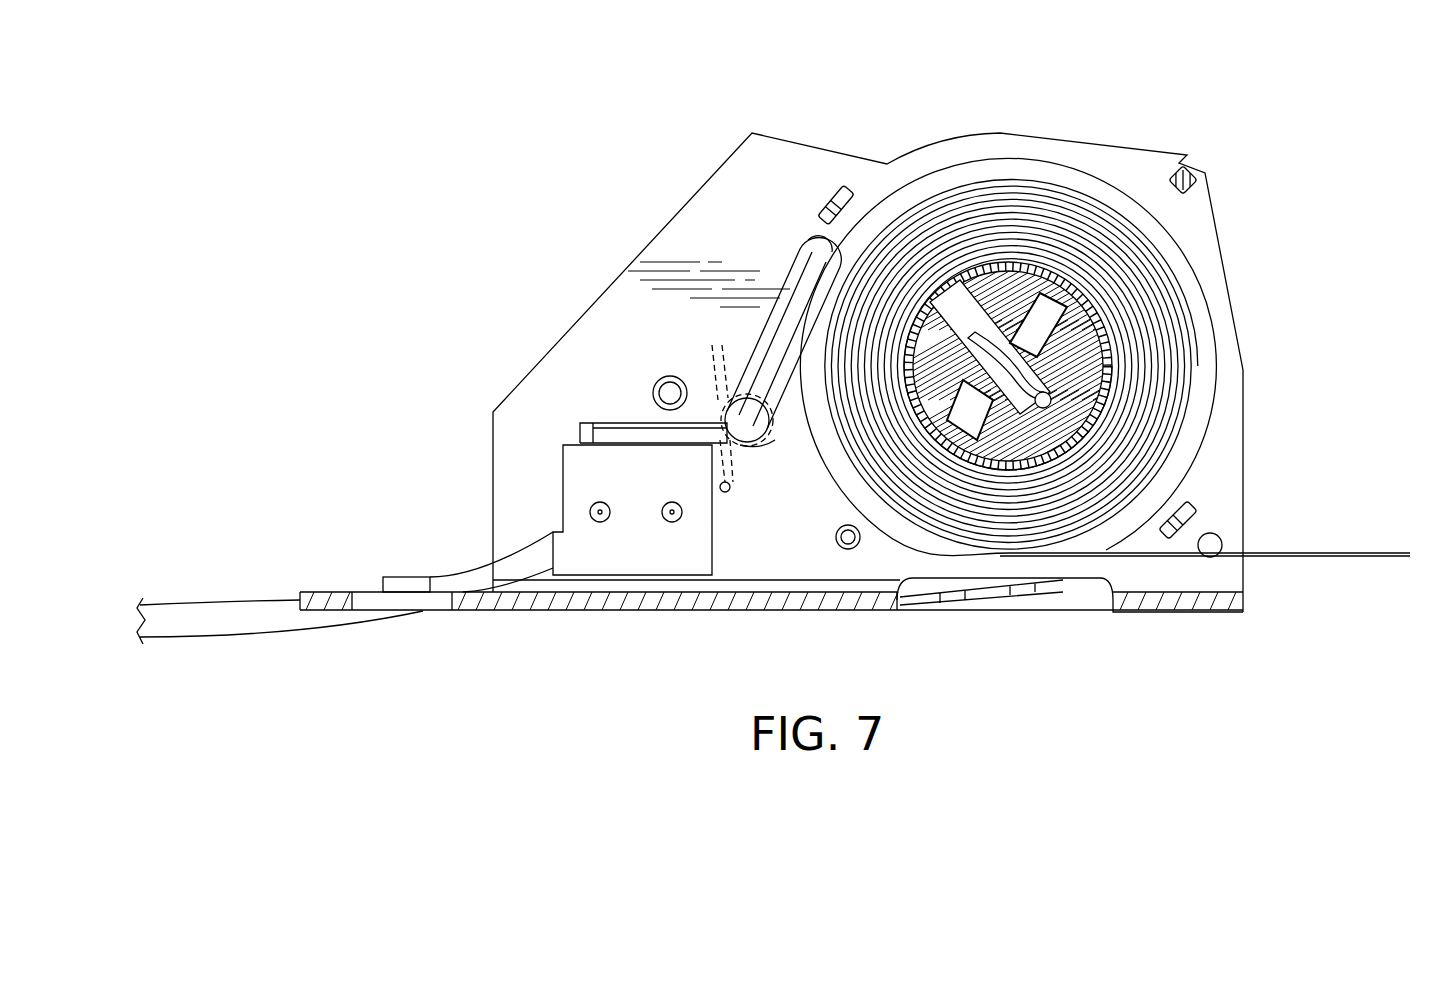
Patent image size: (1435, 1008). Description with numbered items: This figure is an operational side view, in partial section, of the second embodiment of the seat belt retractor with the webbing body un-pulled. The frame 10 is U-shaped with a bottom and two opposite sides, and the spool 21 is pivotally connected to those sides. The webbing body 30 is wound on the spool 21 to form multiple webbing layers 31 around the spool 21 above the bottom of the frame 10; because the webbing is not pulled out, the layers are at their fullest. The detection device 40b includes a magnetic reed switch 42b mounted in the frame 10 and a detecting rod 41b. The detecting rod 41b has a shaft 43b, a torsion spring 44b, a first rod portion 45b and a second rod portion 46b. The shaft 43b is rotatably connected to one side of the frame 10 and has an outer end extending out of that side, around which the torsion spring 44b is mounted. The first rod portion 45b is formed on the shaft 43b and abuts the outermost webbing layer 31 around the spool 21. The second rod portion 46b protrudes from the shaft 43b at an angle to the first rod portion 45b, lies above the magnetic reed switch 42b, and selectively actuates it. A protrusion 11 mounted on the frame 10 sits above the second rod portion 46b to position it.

The frame 10 is at (735, 188).
The protrusion 11 is at (660, 380).
The spool 21 is at (1103, 348).
The webbing body 30 is at (1100, 190).
The webbing layers 31 is at (1158, 250).
The detection device 40b is at (633, 514).
The detecting rod 41b is at (765, 455).
The magnetic reed switch 42b is at (628, 548).
The shaft 43b is at (740, 425).
The torsion spring 44b is at (712, 355).
The first rod portion 45b is at (793, 270).
The second rod portion 46b is at (622, 428).